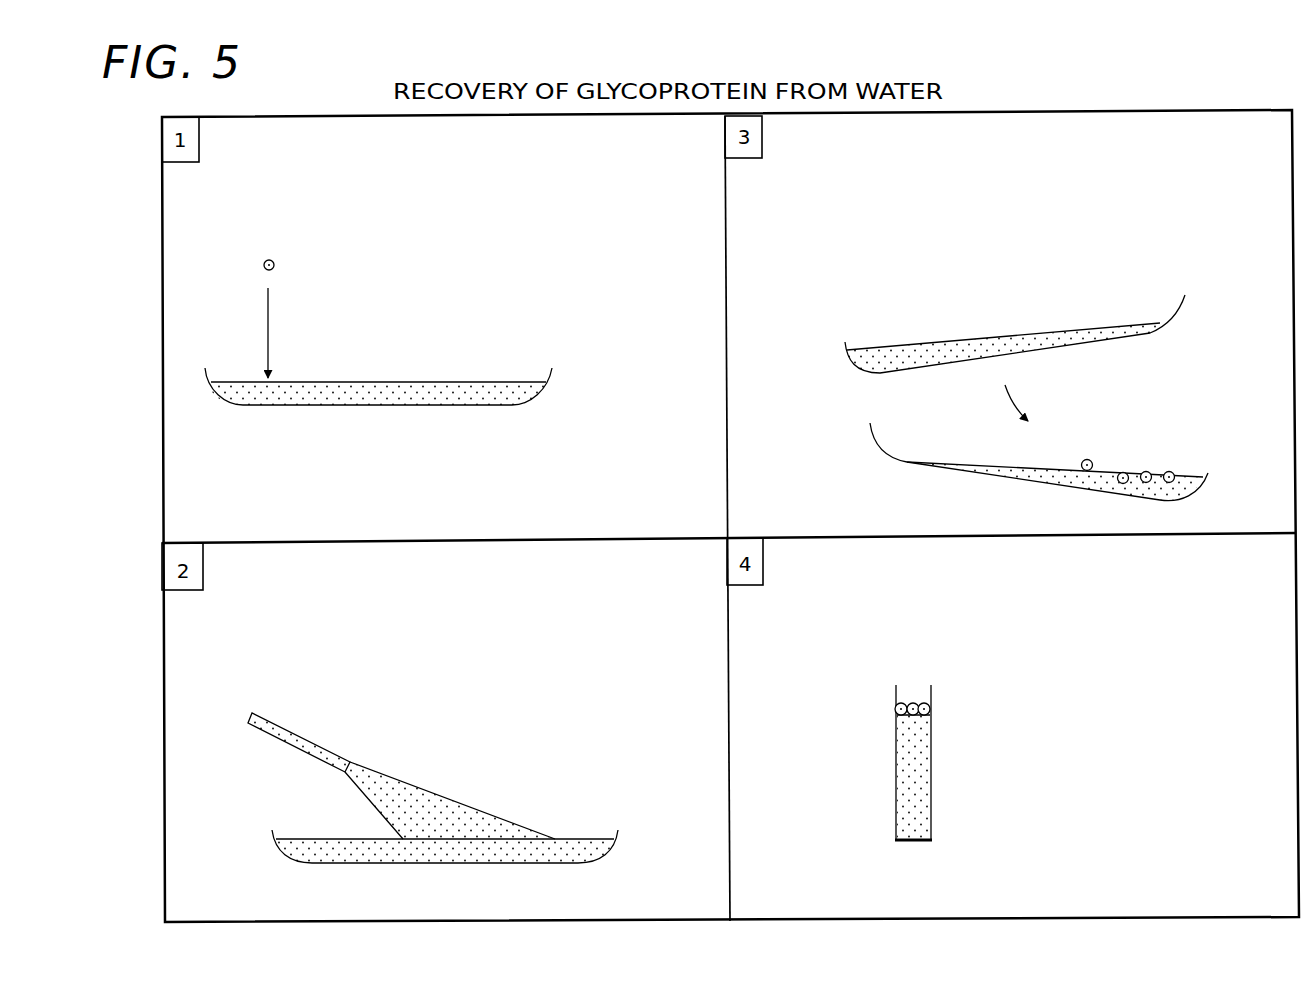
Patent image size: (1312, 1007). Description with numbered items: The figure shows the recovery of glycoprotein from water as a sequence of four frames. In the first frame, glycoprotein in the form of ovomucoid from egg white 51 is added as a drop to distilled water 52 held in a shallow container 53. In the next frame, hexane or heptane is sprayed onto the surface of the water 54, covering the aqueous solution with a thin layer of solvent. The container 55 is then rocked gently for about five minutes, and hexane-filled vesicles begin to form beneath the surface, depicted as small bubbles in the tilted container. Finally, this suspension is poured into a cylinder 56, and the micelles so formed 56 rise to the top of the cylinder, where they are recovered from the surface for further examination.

The ovomucoid from egg white 51 is at (249, 253).
The distilled water 52 is at (432, 376).
The container 53 is at (352, 412).
The surface of the water 54 is at (348, 729).
The container 55 is at (825, 285).
The cylinder 56 is at (916, 670).